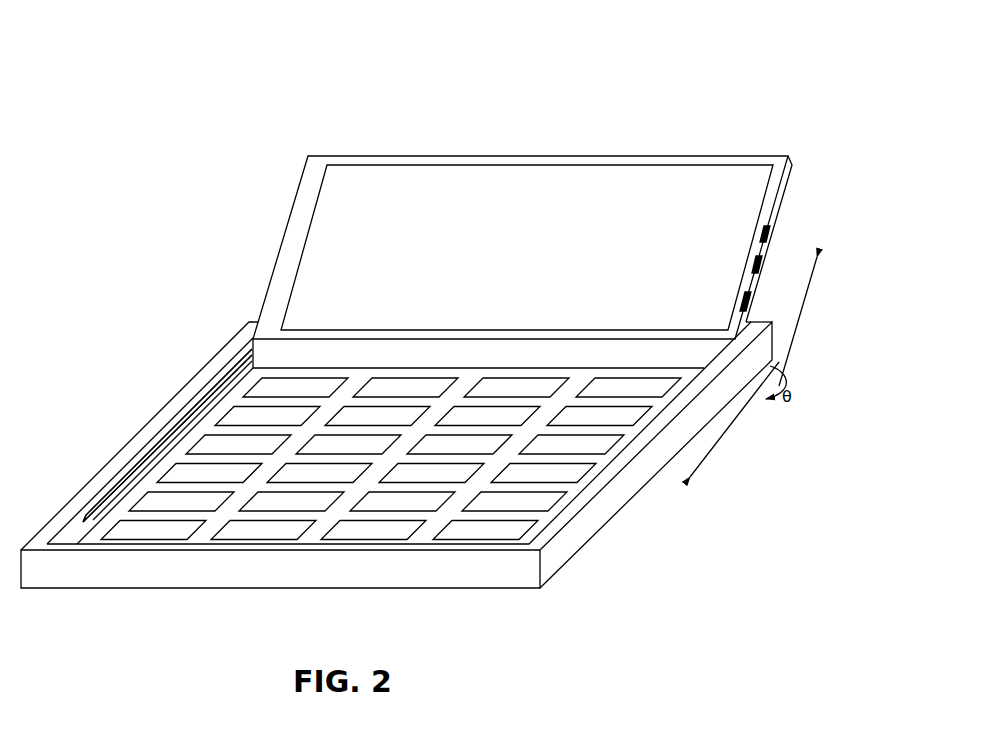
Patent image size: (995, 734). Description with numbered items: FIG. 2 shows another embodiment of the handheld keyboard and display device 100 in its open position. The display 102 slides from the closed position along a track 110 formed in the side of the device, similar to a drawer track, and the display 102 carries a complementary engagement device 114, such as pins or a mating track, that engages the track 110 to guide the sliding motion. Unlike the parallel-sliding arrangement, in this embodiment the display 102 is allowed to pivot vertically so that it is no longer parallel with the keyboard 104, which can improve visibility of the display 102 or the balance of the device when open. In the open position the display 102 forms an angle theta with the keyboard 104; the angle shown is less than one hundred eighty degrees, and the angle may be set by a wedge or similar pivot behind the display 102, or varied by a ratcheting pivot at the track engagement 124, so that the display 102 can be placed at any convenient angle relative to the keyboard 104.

The handheld keyboard and display device 100 is at (357, 92).
The display 102 is at (606, 190).
The keyboard 104 is at (375, 540).
The track 110 is at (194, 404).
The engagement device 114 is at (753, 300).
The track engagement 124 is at (250, 354).